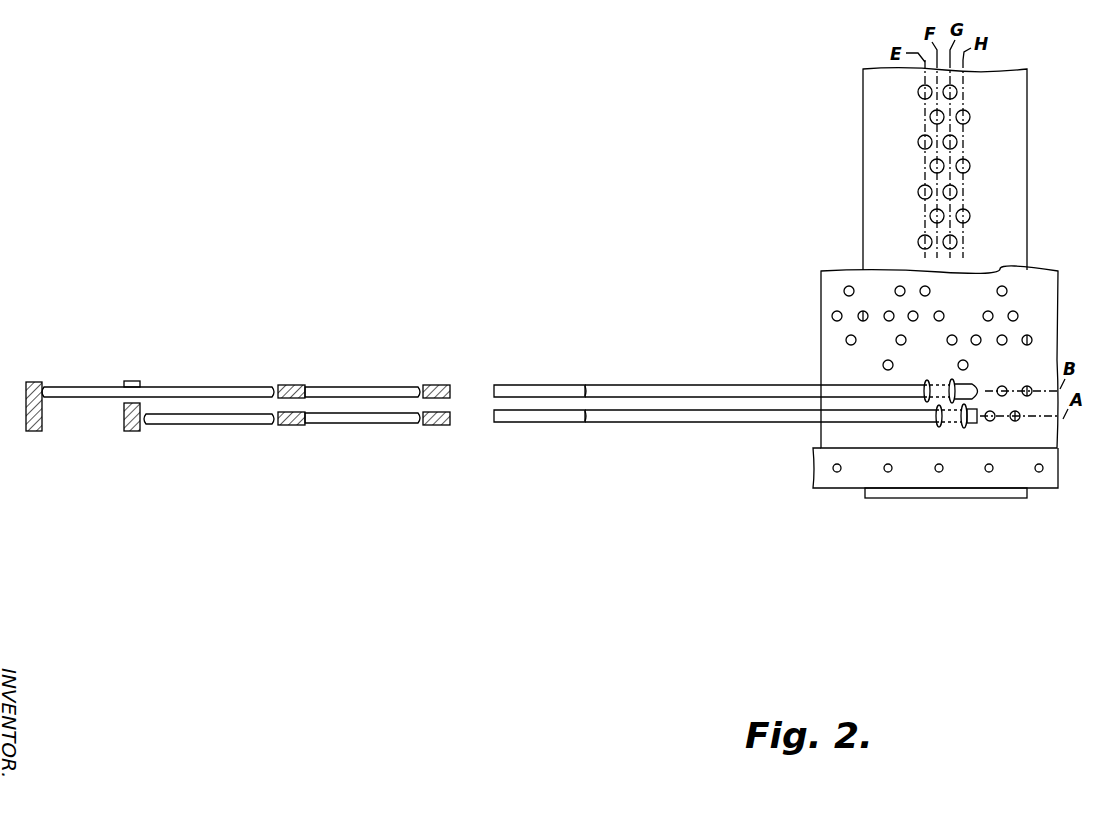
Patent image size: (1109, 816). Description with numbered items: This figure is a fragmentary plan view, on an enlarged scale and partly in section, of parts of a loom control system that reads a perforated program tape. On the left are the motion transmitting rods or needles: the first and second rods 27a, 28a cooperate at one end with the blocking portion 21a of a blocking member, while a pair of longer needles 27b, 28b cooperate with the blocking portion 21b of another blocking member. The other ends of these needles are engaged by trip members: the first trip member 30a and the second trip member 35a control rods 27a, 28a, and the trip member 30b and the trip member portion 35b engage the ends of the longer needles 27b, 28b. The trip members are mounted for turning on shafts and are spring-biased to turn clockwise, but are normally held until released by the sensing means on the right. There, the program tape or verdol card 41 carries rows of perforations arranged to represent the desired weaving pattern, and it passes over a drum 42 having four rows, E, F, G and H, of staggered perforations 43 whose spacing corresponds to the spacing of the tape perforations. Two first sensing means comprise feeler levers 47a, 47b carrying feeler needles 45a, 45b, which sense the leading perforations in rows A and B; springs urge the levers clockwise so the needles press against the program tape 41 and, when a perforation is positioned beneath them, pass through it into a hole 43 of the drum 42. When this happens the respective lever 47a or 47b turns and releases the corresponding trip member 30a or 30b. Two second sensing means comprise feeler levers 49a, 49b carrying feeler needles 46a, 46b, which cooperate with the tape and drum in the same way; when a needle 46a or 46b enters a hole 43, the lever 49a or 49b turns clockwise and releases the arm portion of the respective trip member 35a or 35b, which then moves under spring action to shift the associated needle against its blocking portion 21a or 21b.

The blocking portion 21a is at (133, 381).
The blocking portion 21b is at (35, 382).
The motion transmitting rod 28a is at (238, 423).
The motion transmitting needle 28b is at (218, 380).
The second trip member 35a is at (296, 425).
The trip member portion 35b is at (296, 386).
The motion transmitting rod 27a is at (376, 419).
The motion transmitting needle 27b is at (372, 393).
The first trip member 30a is at (439, 425).
The trip member 30b is at (443, 379).
The feeler lever 47a is at (545, 420).
The feeler lever 47b is at (543, 382).
The feeler lever 49a is at (664, 420).
The feeler lever 49b is at (663, 391).
The program tape 41 is at (828, 300).
The drum 42 is at (880, 117).
The perforations 43 is at (917, 192).
The feeler needle 45a is at (939, 428).
The feeler needle 45b is at (927, 402).
The feeler needle 46a is at (965, 427).
The feeler needle 46b is at (953, 380).